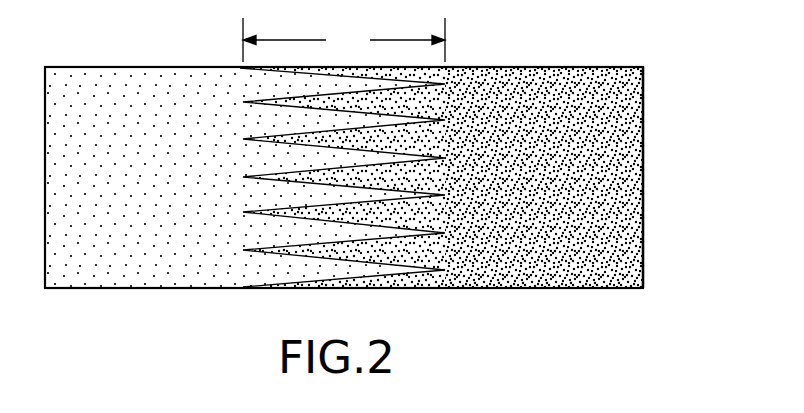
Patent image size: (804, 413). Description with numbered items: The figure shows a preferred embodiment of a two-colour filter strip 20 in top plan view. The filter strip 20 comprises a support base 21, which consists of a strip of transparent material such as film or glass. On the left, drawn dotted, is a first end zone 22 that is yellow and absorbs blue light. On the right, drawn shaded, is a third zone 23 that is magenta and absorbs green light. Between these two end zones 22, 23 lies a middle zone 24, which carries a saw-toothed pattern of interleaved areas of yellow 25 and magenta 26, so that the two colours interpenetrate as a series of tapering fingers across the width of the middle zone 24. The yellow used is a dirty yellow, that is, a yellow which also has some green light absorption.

The filter strip 20 is at (610, 50).
The support base 21 is at (645, 180).
The first end zone 22 is at (158, 182).
The third zone 23 is at (566, 194).
The middle zone 24 is at (344, 40).
The yellow areas 25 is at (303, 50).
The magenta areas 26 is at (416, 56).